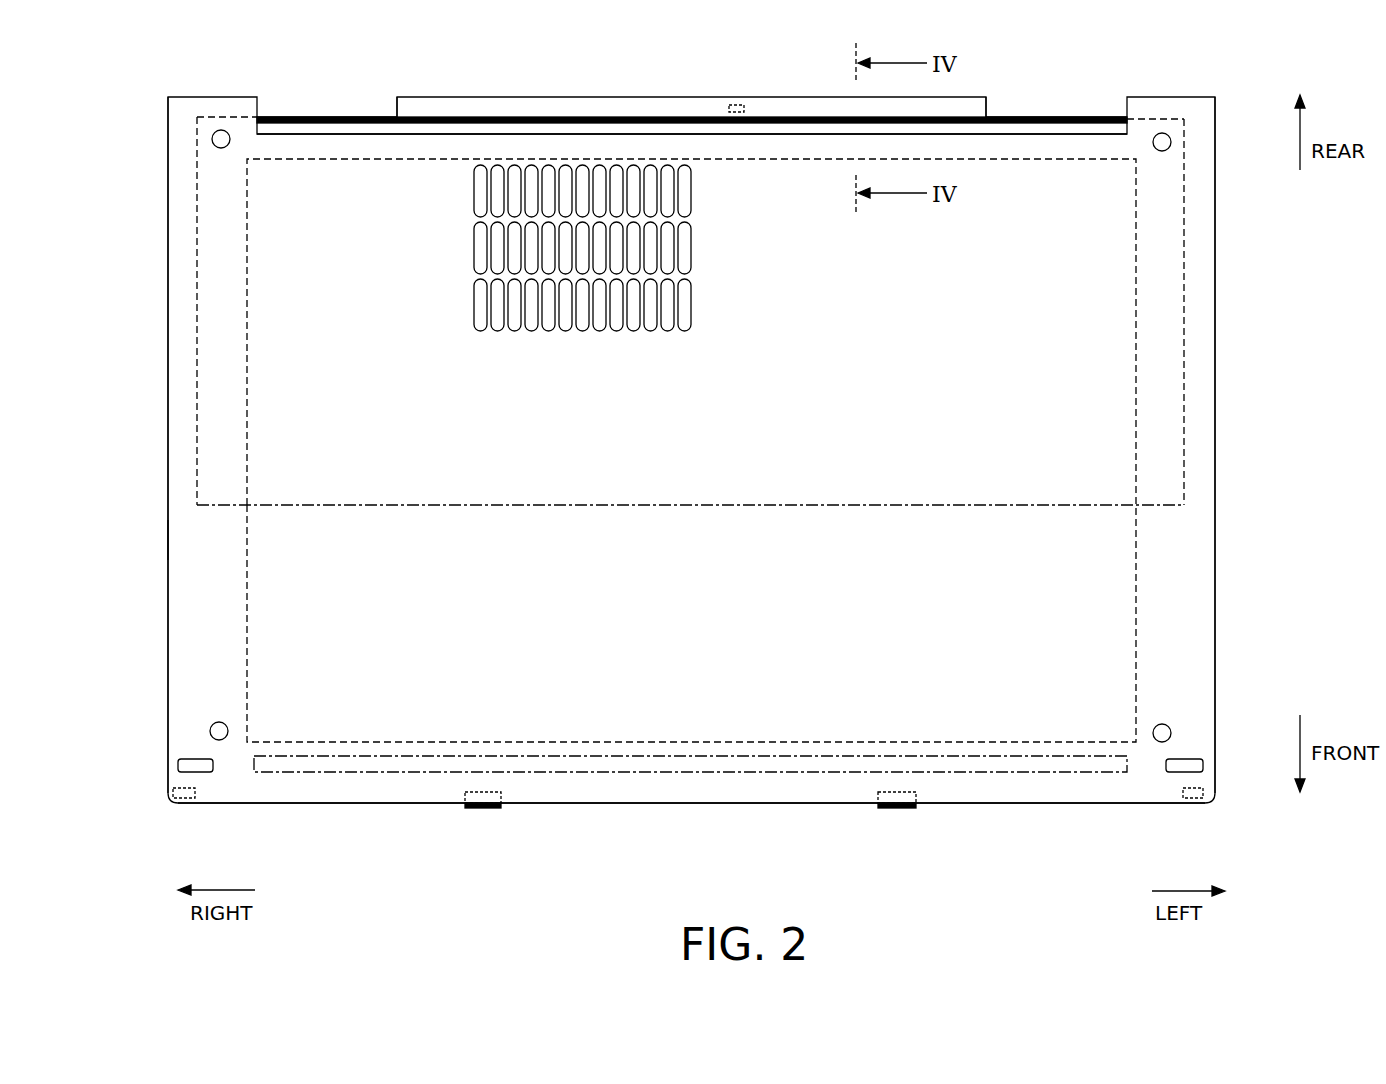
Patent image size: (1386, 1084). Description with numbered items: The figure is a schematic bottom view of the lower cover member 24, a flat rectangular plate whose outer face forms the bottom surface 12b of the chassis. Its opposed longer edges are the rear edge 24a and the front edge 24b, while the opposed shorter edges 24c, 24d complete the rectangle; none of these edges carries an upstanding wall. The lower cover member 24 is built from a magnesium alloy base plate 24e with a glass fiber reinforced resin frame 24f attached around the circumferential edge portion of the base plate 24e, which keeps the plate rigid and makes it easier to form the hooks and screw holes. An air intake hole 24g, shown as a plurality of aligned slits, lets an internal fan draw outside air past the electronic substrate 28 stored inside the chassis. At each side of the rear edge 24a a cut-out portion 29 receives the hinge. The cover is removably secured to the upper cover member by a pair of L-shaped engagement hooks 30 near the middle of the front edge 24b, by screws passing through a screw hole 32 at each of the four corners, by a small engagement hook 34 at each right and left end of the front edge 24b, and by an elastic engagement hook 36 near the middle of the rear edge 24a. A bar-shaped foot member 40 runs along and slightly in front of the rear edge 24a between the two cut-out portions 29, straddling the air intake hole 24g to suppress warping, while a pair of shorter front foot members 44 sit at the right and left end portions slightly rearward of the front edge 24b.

The lower cover member 24 is at (121, 79).
The rear edge 24a is at (520, 97).
The front edge 24b is at (600, 804).
The edge 24c is at (1216, 287).
The edge 24d is at (168, 320).
The base plate 24e is at (1096, 402).
The frame 24f is at (1173, 530).
The air intake hole 24g is at (617, 190).
The electronic substrate 28 is at (197, 265).
The cut-out portion 29 is at (397, 117).
The engagement hook 30 is at (483, 809).
The screw hole 32 is at (212, 139).
The engagement hook 34 is at (175, 792).
The engagement hook 36 is at (738, 104).
The foot member 40 is at (746, 138).
The front foot member 44 is at (178, 765).
The bottom surface 12b is at (190, 535).